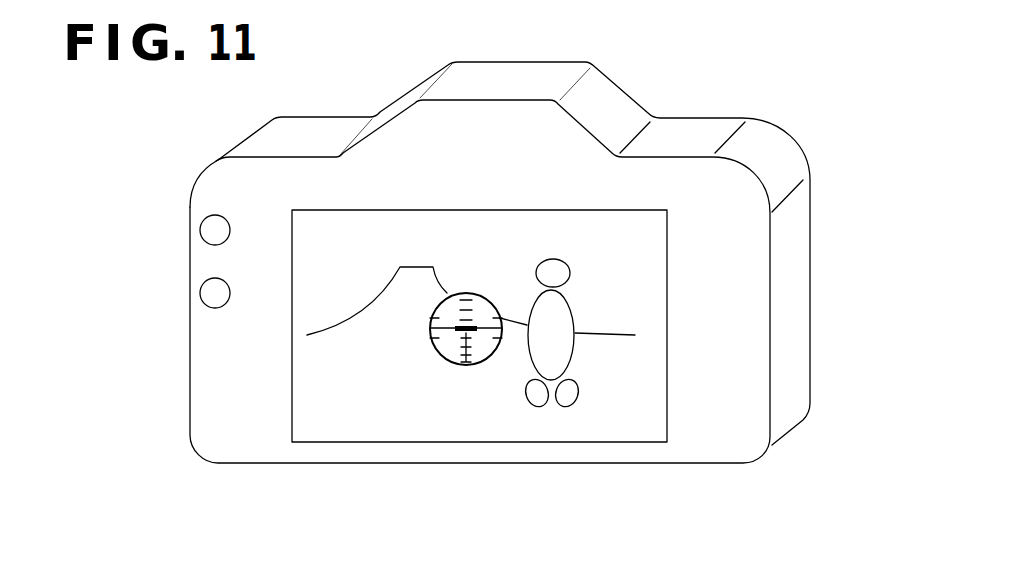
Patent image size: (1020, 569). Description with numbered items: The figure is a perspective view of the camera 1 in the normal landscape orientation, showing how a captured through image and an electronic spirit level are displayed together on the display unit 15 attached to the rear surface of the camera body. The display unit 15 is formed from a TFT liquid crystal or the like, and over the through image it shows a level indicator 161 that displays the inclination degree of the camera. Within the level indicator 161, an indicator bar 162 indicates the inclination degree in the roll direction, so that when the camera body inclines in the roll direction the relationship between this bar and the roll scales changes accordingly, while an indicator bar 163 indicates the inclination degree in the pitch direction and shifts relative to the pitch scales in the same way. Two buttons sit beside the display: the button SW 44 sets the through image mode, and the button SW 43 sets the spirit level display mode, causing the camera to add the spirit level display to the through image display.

The camera (image pickup apparatus) 1 is at (222, 391).
The display unit 15 is at (291, 445).
The button SW 43 is at (214, 293).
The button SW 44 is at (214, 230).
The level indicator 161 is at (448, 360).
The indicator bar 162 is at (482, 332).
The indicator bar 163 is at (466, 366).